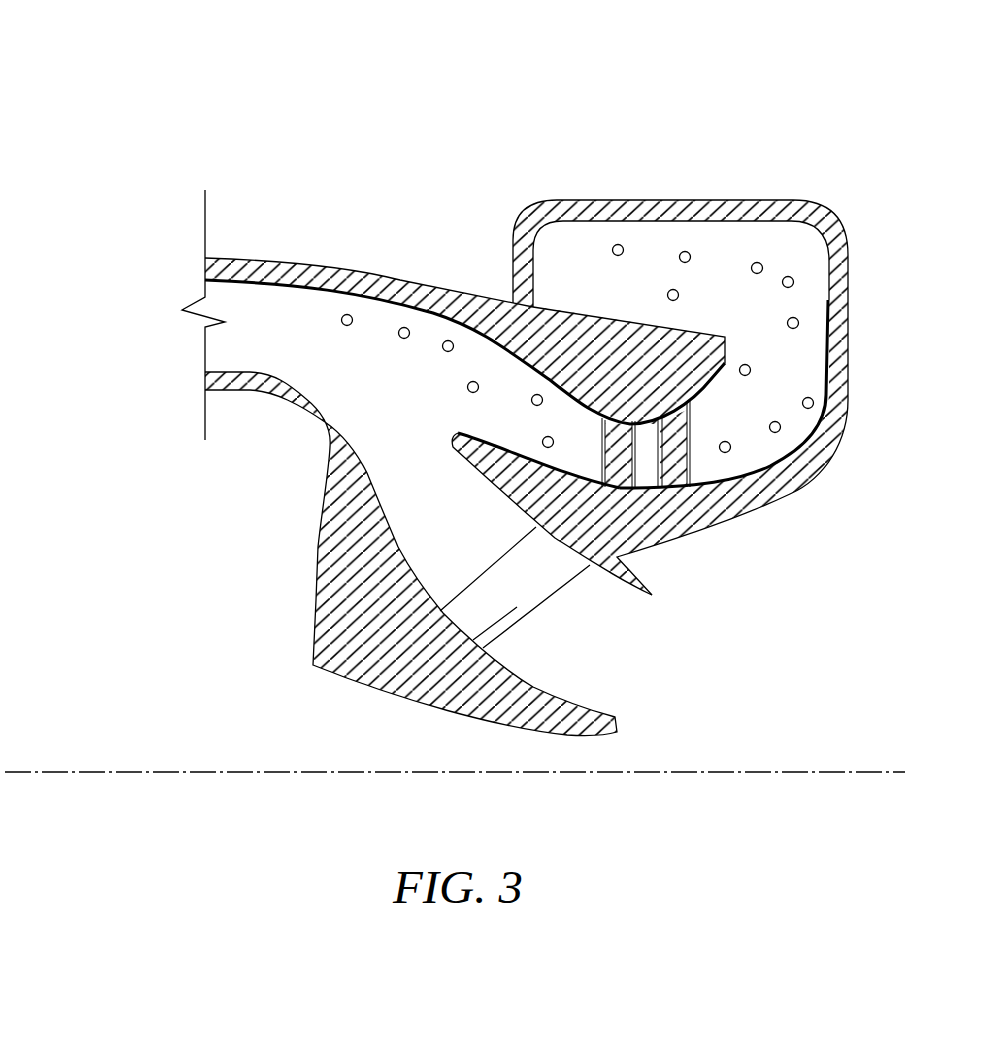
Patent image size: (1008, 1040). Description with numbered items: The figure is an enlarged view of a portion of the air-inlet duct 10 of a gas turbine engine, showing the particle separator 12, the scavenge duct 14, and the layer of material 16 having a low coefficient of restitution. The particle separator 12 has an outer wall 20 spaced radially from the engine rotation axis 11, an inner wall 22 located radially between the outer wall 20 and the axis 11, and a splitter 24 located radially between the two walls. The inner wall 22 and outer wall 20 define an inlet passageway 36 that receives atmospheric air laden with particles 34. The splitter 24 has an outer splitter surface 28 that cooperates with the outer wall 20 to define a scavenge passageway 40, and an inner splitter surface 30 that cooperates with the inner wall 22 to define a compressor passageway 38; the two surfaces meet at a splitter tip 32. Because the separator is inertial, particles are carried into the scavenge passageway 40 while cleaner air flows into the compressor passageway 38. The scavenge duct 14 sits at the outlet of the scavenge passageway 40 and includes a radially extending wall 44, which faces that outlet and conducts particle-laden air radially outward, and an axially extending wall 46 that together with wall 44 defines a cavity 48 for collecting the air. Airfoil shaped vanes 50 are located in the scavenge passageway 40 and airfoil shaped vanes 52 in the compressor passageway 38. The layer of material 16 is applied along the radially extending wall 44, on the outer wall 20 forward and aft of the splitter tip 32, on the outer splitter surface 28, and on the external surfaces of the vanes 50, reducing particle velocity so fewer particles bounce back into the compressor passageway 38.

The air-inlet duct 10 is at (268, 108).
The engine rotation axis 11 is at (831, 770).
The particle separator 12 is at (398, 258).
The scavenge duct 14 is at (688, 367).
The layer of material 16 is at (428, 313).
The outer wall 20 is at (292, 280).
The inner wall 22 is at (370, 470).
The splitter 24 is at (492, 466).
The outer splitter surface 28 is at (517, 447).
The inner splitter surface 30 is at (492, 496).
The splitter tip 32 is at (457, 433).
The particles 34 is at (342, 325).
The inlet passageway 36 is at (250, 302).
The compressor passageway 38 is at (440, 535).
The scavenge passageway 40 is at (549, 420).
The radially extending wall 44 is at (838, 312).
The axially extending wall 46 is at (728, 207).
The cavity 48 is at (753, 252).
The airfoil shaped vanes 50 is at (633, 466).
The airfoil shaped vanes 52 is at (562, 578).